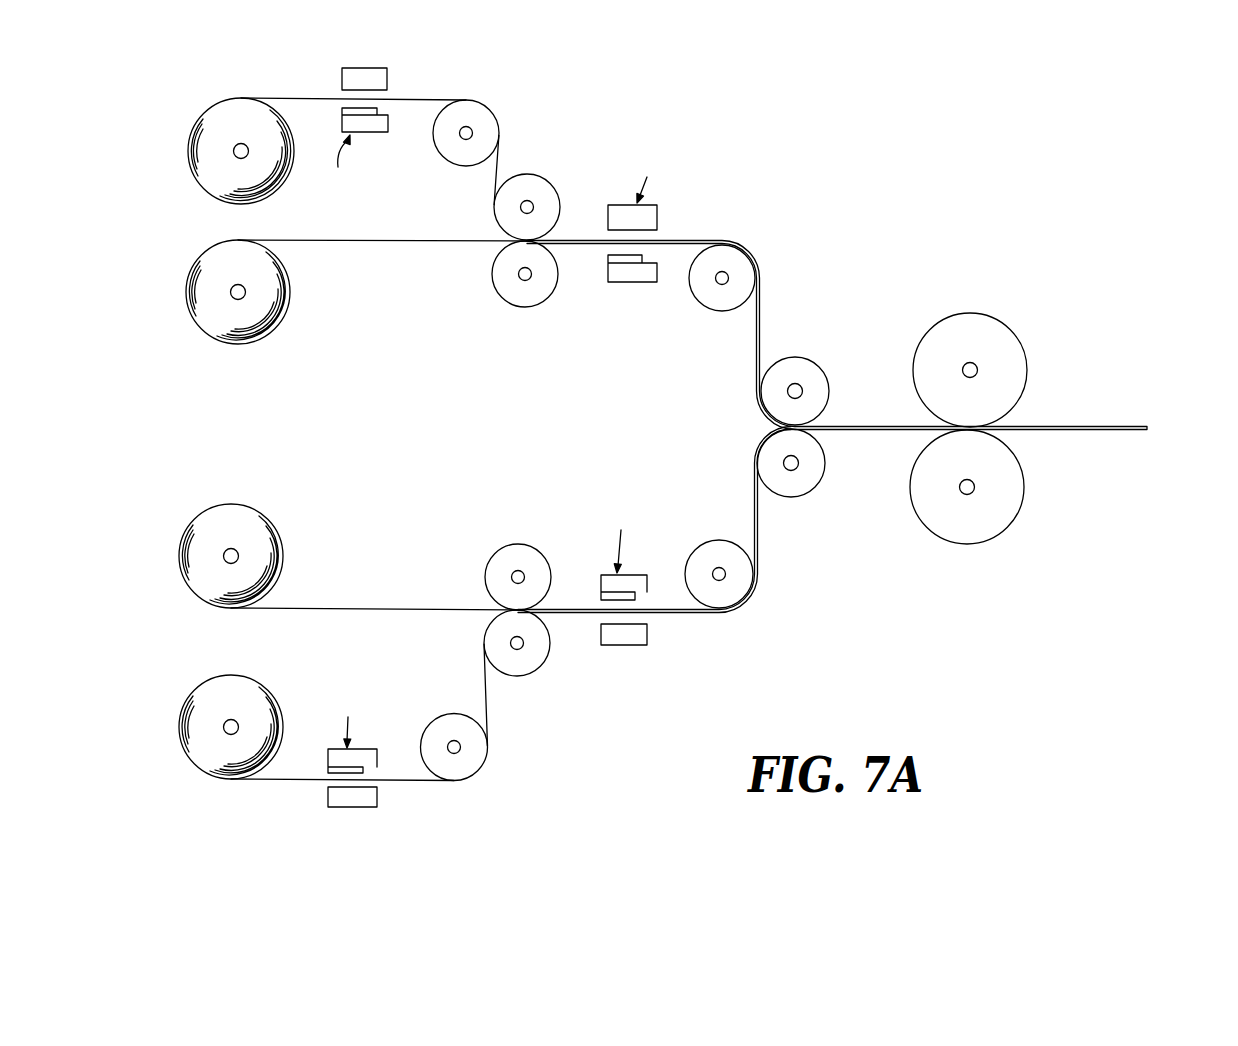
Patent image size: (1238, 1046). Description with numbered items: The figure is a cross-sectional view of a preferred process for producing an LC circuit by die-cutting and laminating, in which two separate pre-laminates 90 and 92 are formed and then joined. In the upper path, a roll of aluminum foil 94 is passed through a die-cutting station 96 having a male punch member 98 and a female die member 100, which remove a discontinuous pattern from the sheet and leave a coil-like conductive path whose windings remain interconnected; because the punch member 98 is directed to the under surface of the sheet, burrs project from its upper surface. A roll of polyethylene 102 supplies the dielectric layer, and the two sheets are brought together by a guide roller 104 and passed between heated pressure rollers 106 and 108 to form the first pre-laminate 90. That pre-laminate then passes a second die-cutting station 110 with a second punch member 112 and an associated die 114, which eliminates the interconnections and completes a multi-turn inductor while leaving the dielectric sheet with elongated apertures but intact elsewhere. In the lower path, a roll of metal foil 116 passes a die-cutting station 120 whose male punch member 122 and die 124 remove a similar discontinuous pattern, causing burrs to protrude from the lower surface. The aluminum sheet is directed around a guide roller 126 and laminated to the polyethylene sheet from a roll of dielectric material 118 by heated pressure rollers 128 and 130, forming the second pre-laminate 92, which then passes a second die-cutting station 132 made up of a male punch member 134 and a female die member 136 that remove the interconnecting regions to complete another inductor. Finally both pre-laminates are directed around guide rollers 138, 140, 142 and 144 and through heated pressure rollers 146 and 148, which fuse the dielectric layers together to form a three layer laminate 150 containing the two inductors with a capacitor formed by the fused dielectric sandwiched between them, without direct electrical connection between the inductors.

The first pre-laminate 90 is at (582, 240).
The second pre-laminate 92 is at (578, 613).
The roll of aluminum foil 94 is at (200, 128).
The die-cutting station 96 is at (353, 161).
The male punch member 98 is at (388, 132).
The female die member 100 is at (387, 79).
The roll of polyethylene 102 is at (212, 330).
The guide roller 104 is at (461, 165).
The heated pressure roller 106 is at (537, 188).
The heated pressure roller 108 is at (522, 303).
The second die-cutting station 110 is at (650, 173).
The second punch member 112 is at (642, 282).
The die 114 is at (655, 213).
The roll of metal foil 116 is at (205, 682).
The roll of dielectric material 118 is at (225, 505).
The die-cutting station 120 is at (351, 719).
The male punch member 122 is at (377, 748).
The die 124 is at (377, 800).
The guide roller 126 is at (452, 715).
The heated pressure roller 128 is at (525, 548).
The heated pressure roller 130 is at (528, 678).
The second die-cutting station 132 is at (625, 537).
The male punch member 134 is at (647, 577).
The female die member 136 is at (633, 645).
The guide roller 138 is at (722, 305).
The guide roller 140 is at (709, 548).
The guide roller 142 is at (805, 365).
The guide roller 144 is at (805, 488).
The heated pressure roller 146 is at (1003, 335).
The heated pressure roller 148 is at (1007, 515).
The three layer laminate 150 is at (1112, 423).